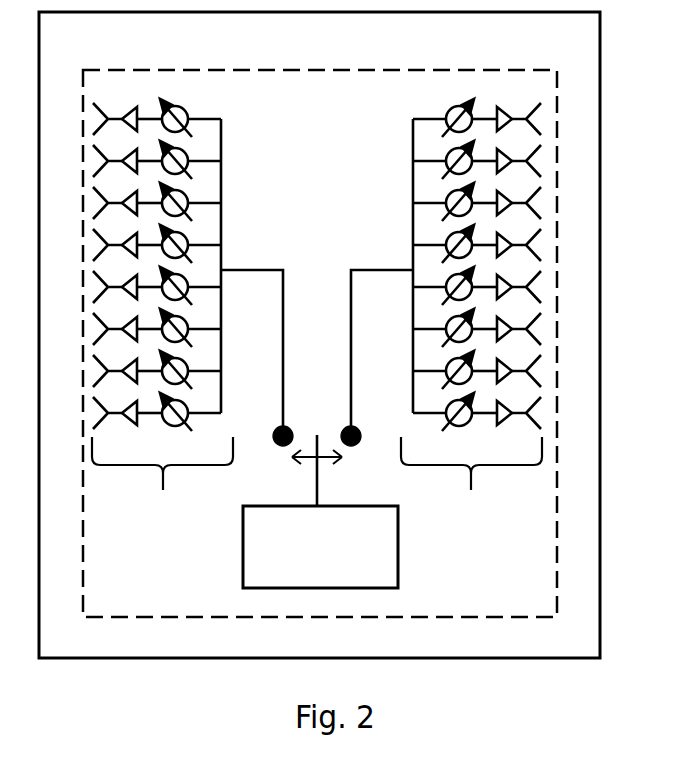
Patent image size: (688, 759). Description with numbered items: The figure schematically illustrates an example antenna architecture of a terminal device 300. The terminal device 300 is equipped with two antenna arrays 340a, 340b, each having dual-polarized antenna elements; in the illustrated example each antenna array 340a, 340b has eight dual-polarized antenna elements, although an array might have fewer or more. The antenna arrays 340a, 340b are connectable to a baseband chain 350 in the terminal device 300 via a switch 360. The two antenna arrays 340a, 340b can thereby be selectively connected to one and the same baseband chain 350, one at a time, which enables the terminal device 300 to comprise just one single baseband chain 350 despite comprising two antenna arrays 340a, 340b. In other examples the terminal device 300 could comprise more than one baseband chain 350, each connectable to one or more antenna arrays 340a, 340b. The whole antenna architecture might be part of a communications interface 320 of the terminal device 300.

The terminal device 300 is at (343, 50).
The communications interface 320 is at (343, 110).
The antenna array 340a is at (187, 314).
The antenna array 340b is at (446, 314).
The baseband chain 350 is at (398, 575).
The switch 360 is at (318, 432).